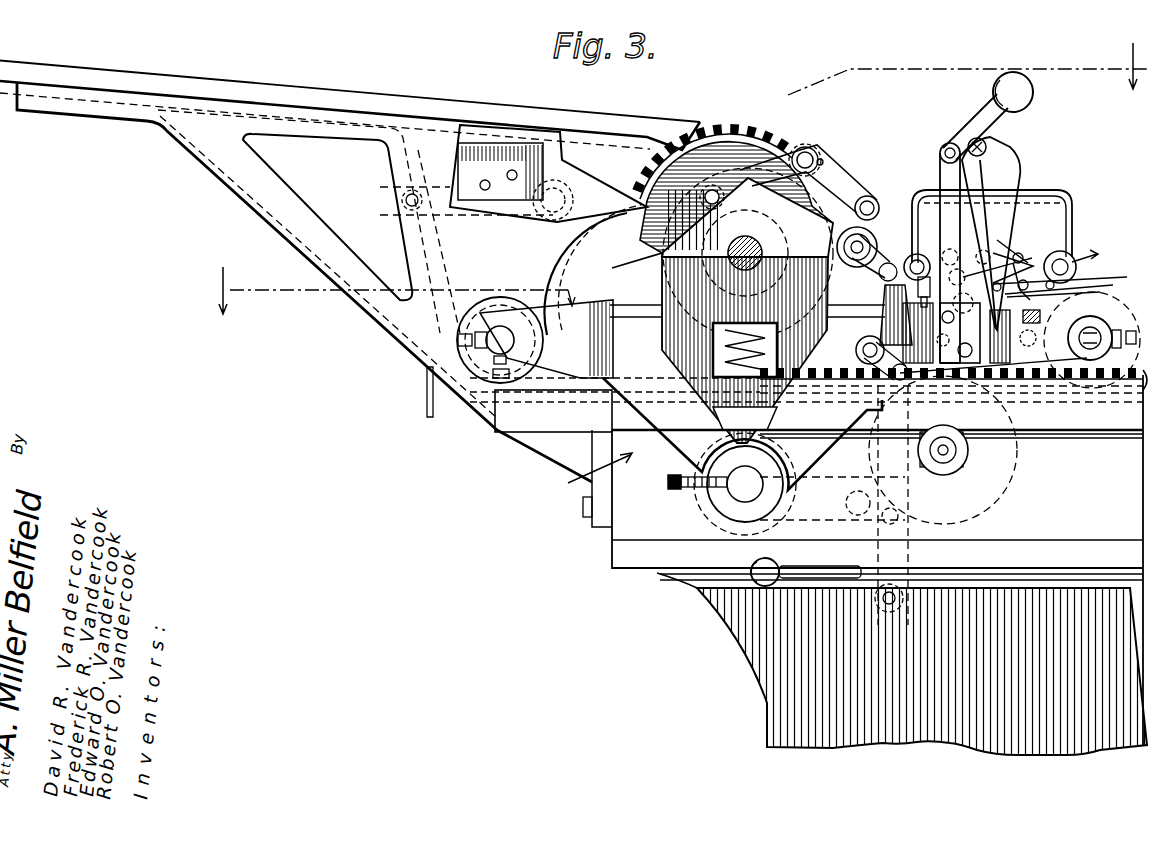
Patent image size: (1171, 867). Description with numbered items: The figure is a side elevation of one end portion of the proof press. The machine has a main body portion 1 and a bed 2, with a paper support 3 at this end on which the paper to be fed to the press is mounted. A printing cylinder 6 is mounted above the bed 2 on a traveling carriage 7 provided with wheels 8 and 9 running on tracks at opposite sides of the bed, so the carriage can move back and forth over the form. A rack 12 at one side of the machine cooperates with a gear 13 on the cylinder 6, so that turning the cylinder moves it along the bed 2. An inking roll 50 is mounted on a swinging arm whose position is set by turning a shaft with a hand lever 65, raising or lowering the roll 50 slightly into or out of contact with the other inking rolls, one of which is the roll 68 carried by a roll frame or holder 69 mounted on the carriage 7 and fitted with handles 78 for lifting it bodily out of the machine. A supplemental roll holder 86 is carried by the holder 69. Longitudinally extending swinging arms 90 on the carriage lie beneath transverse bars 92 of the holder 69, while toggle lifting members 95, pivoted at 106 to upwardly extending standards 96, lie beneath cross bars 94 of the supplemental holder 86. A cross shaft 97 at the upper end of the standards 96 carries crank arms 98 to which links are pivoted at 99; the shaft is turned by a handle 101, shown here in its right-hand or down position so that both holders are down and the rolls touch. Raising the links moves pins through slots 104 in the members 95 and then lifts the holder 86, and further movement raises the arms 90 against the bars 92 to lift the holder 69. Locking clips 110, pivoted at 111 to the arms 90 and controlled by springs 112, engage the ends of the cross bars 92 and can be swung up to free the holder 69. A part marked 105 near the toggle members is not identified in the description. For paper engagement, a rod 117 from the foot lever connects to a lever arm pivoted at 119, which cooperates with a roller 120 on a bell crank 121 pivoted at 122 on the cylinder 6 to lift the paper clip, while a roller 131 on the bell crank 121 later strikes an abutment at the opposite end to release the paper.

The main body portion 1 is at (762, 690).
The bed 2 is at (666, 269).
The paper support 3 is at (357, 99).
The printing cylinder 6 is at (695, 136).
The traveling carriage 7 is at (568, 290).
The wheels 8 is at (480, 368).
The wheels 9 is at (1073, 310).
The rack 12 is at (1143, 378).
The gear 13 is at (798, 145).
The inking roll 50 is at (1013, 480).
The hand lever 65 is at (828, 572).
The inking roll 68 is at (1102, 335).
The roll frame 69 is at (1113, 281).
The handles 78 is at (1052, 192).
The supplemental roll holder 86 is at (1016, 253).
The swinging arms 90 is at (1067, 303).
The cross bars 92 is at (910, 262).
The cross bars 94 is at (999, 285).
The toggle lifting members 95 is at (971, 355).
The standards 96 is at (940, 177).
The cross shaft 97 is at (940, 156).
The crank arms 98 is at (990, 162).
The pivot 99 is at (986, 147).
The handle 101 is at (993, 104).
The slots 104 is at (1000, 253).
The gear 105 is at (960, 255).
The pivot 106 is at (932, 262).
The locking clips 110 is at (1046, 263).
The pivot 111 is at (1030, 268).
The springs 112 is at (1042, 315).
The rod 117 is at (427, 386).
The pivot 119 is at (548, 173).
The roller 120 is at (712, 189).
The bell crank 121 is at (802, 150).
The pivot 122 is at (822, 158).
The roller 131 is at (868, 196).